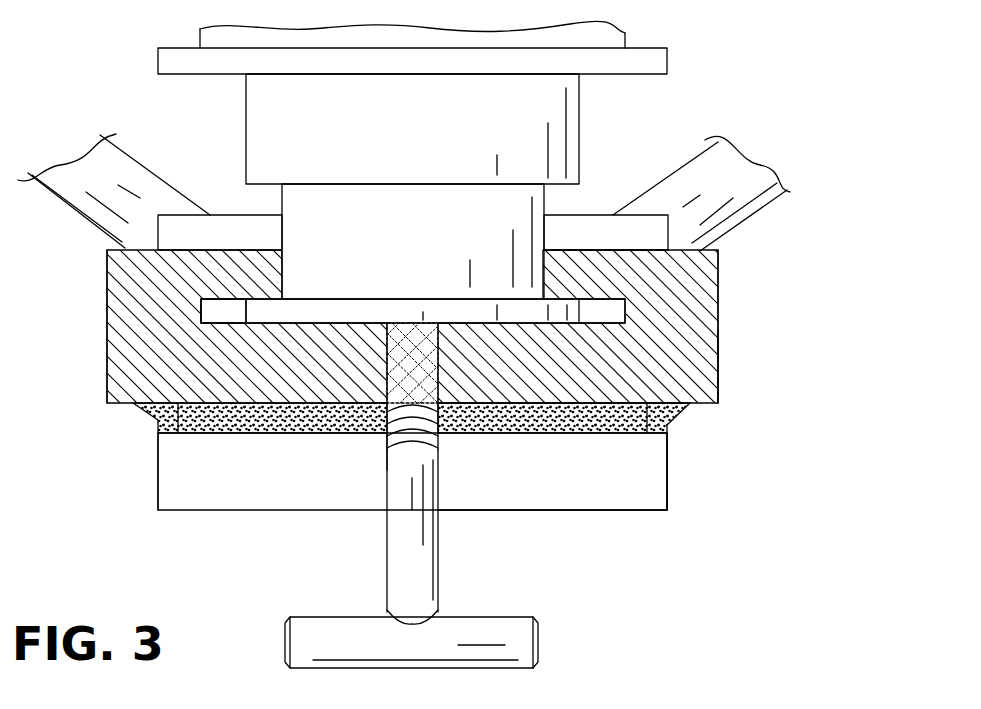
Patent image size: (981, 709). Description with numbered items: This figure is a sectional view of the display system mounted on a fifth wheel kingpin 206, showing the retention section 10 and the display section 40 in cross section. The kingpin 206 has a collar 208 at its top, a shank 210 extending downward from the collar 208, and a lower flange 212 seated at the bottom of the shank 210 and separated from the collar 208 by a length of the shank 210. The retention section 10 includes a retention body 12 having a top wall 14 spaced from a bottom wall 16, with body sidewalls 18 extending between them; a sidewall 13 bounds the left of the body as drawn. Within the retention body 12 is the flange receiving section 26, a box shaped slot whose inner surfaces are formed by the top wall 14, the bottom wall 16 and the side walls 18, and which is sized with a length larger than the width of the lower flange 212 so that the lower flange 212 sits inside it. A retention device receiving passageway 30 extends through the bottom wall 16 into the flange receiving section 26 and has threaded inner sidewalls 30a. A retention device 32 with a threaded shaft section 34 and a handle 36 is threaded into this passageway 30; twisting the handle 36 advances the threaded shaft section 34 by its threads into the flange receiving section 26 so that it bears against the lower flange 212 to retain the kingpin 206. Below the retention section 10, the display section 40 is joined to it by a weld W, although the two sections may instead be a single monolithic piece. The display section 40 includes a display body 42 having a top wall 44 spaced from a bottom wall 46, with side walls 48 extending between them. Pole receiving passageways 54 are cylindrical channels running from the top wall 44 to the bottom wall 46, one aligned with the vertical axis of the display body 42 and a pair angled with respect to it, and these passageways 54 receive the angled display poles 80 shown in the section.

The retention section 10 is at (718, 305).
The retention body 12 is at (135, 338).
The side wall 13 is at (107, 295).
The top wall 14 is at (578, 240).
The bottom wall 16 is at (573, 405).
The body sidewalls 18 is at (718, 372).
The flange receiving section 26 is at (217, 318).
The retention device receiving passageway 30 is at (387, 423).
The inner sidewalls 30a is at (437, 373).
The retention device 32 is at (427, 575).
The threaded shaft section 34 is at (388, 448).
The handle 36 is at (530, 640).
The display section 40 is at (667, 493).
The display body 42 is at (247, 486).
The top wall 44 is at (230, 215).
The bottom wall 46 is at (617, 512).
The side walls 48 is at (158, 487).
The pole receiving passageways 54 is at (637, 230).
The support rods 80 is at (82, 148).
The kingpin 206 is at (352, 165).
The collar 208 is at (187, 55).
The shank 210 is at (420, 250).
The lower flange 212 is at (360, 299).
The weld W is at (197, 422).